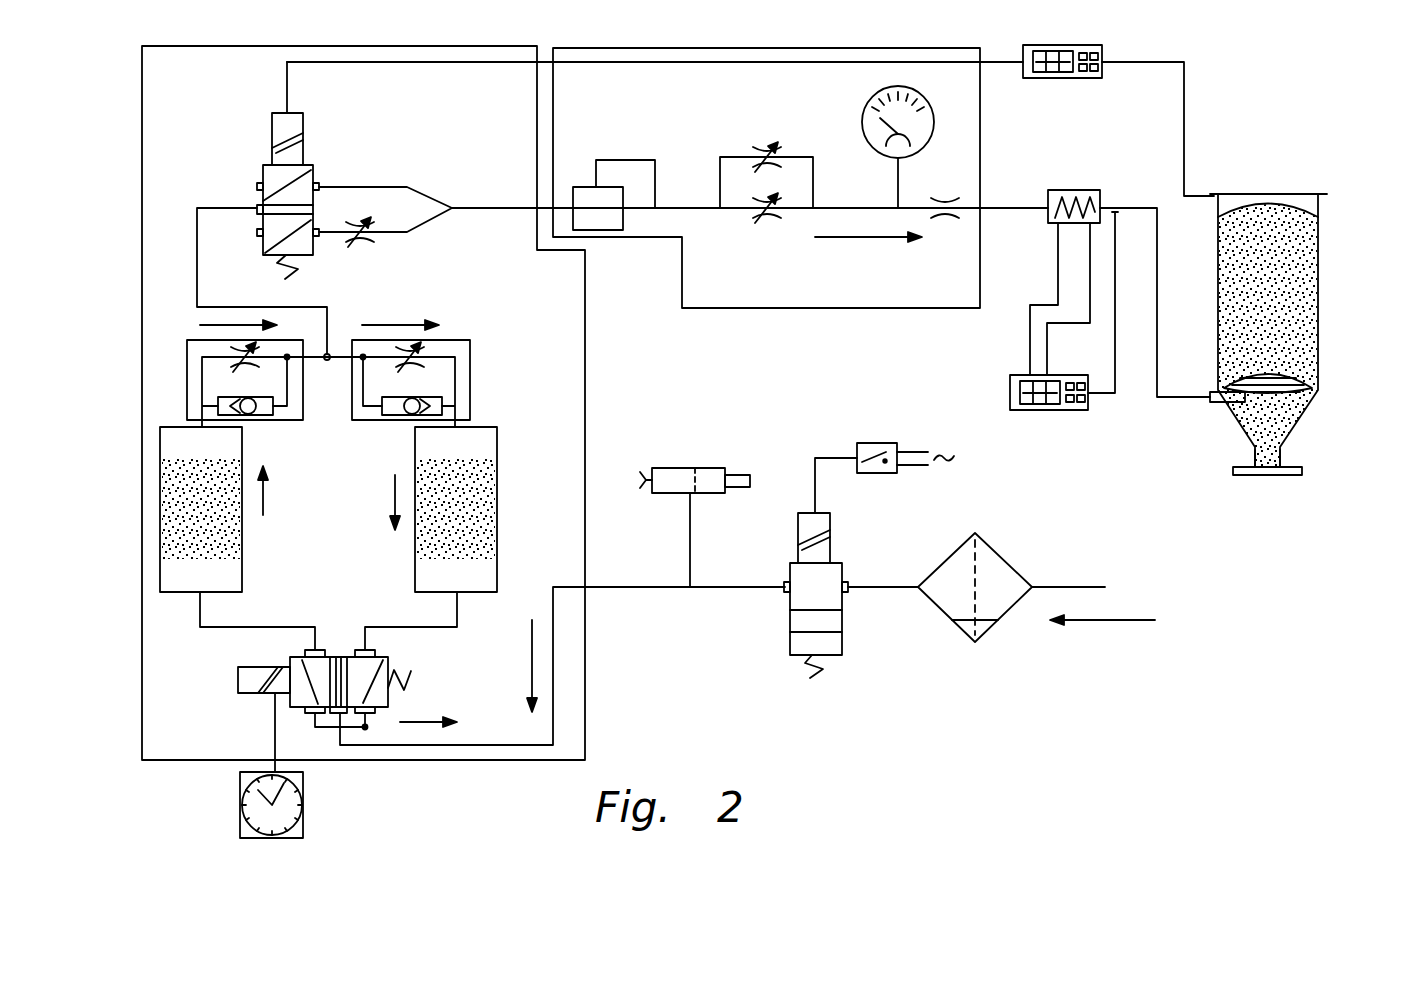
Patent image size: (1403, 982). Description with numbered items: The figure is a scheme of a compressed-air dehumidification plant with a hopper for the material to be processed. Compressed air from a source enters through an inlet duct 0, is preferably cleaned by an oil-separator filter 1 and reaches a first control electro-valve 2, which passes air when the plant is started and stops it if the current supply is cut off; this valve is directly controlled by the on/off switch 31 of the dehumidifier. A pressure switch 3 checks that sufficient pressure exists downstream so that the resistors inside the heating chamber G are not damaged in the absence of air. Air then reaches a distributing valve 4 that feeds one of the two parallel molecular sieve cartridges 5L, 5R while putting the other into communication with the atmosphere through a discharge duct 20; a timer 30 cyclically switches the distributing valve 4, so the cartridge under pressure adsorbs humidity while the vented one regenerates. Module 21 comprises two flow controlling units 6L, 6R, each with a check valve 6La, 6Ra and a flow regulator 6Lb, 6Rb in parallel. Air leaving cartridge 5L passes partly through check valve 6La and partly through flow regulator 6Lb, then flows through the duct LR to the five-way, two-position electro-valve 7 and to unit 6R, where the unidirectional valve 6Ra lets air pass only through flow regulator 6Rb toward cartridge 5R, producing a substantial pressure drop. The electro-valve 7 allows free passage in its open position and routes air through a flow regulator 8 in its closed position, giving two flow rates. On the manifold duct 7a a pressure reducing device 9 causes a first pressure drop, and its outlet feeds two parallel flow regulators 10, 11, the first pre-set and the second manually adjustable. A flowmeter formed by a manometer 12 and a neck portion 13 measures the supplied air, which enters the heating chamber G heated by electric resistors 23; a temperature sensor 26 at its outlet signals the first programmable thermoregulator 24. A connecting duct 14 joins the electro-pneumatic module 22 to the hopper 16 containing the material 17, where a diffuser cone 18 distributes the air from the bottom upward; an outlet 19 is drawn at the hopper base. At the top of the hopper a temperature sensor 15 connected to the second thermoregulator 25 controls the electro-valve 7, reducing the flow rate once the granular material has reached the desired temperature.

The inlet duct 0 is at (1093, 585).
The oil-separator filter 1 is at (1000, 548).
The control electro-valve 2 is at (785, 620).
The pressure switch 3 is at (712, 467).
The distributing valve 4 is at (388, 660).
The molecular sieve cartridge 5L is at (240, 548).
The molecular sieve cartridge 5R is at (500, 508).
The flow controlling unit 6L is at (192, 369).
The check valve 6La is at (263, 415).
The flow regulator 6Lb is at (235, 368).
The flow controlling unit 6R is at (453, 369).
The check valve 6Ra is at (385, 415).
The flow regulator 6Rb is at (430, 340).
The duct LR is at (330, 360).
The five-way and two-position electro-valve 7 is at (264, 170).
The manifold duct 7a is at (488, 203).
The flow regulator 8 is at (370, 242).
The pressure reducing device 9 is at (577, 187).
The flow regulator 10 is at (765, 140).
The flow regulator 11 is at (767, 224).
The manometer 12 is at (930, 103).
The neck portion 13 is at (947, 215).
The connecting duct 14 is at (1160, 275).
The temperature sensor 15 is at (1211, 200).
The hopper 16 is at (1320, 225).
The material 17 is at (1300, 320).
The diffuser cone 18 is at (1273, 375).
The outlet 19 is at (1283, 452).
The discharge duct 20 is at (393, 723).
The module 21 is at (590, 385).
The module 22 is at (855, 308).
The electric resistors 23 is at (1057, 209).
The heating chamber G is at (1080, 176).
The first programmable thermoregulator 24 is at (1058, 412).
The second thermoregulator 25 is at (1057, 80).
The temperature sensor 26 is at (1118, 210).
The timer 30 is at (305, 780).
The on/off switch 31 is at (878, 475).